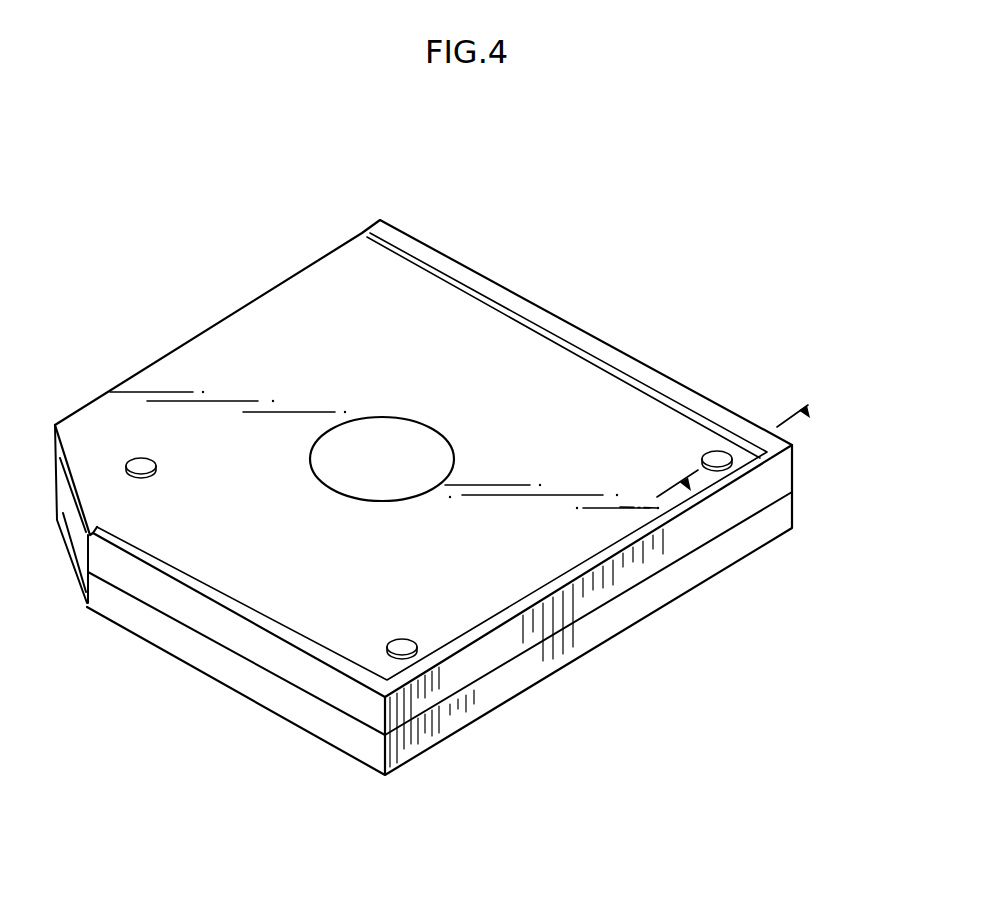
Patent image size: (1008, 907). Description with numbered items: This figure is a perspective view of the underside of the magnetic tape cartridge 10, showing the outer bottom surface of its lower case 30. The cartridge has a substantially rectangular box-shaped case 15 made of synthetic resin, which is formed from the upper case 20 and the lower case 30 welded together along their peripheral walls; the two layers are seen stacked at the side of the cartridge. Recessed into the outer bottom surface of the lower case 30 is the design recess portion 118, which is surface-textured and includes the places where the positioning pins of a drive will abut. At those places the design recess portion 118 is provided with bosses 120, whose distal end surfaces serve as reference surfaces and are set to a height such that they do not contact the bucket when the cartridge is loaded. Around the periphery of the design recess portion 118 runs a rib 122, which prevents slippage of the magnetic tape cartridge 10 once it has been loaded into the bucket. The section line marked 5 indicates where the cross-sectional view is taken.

The magnetic tape cartridge 10 is at (691, 307).
The case 15 is at (853, 458).
The lower case 30 is at (787, 470).
The upper case 20 is at (787, 516).
The design recess portion 118 is at (495, 330).
The rib 122 is at (437, 252).
The bosses 120 is at (150, 464).
The section line 5- 5 is at (727, 466).